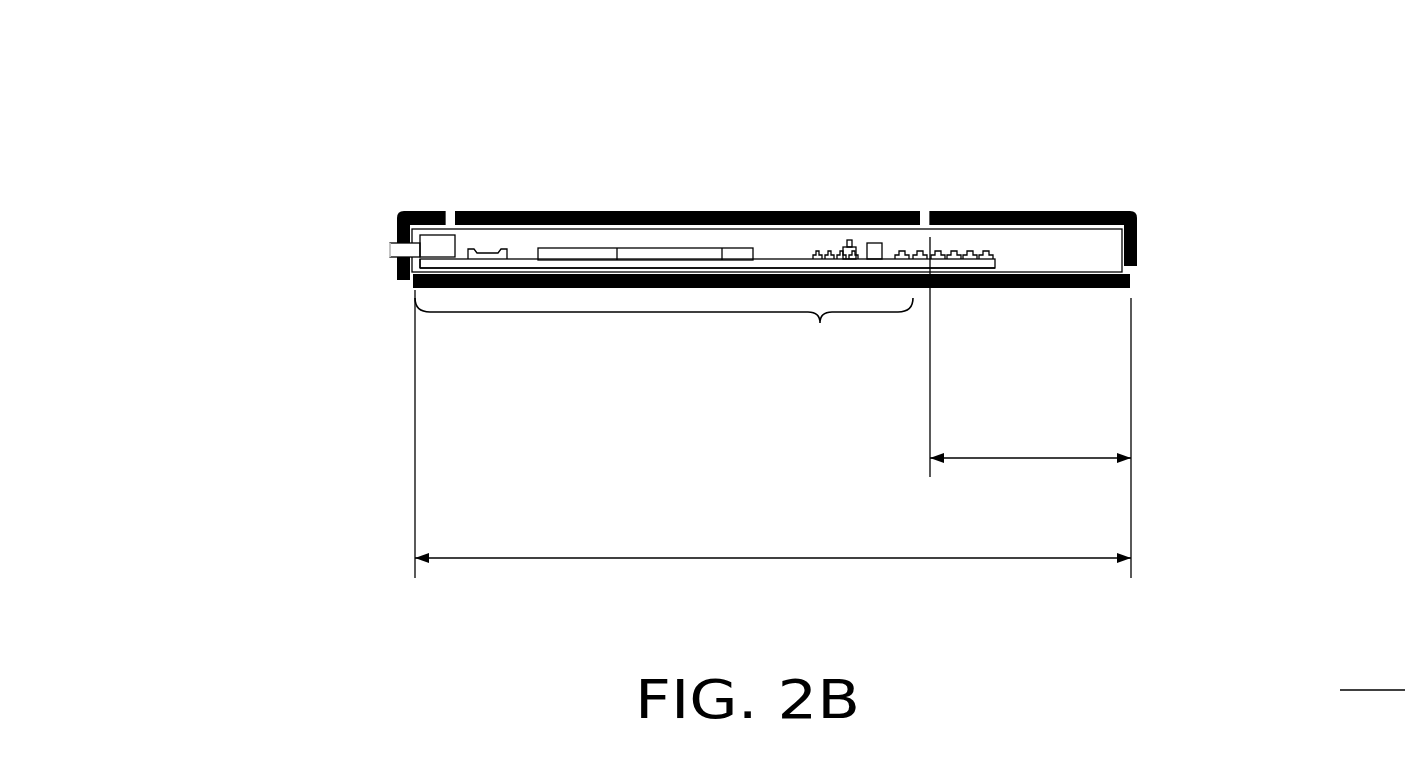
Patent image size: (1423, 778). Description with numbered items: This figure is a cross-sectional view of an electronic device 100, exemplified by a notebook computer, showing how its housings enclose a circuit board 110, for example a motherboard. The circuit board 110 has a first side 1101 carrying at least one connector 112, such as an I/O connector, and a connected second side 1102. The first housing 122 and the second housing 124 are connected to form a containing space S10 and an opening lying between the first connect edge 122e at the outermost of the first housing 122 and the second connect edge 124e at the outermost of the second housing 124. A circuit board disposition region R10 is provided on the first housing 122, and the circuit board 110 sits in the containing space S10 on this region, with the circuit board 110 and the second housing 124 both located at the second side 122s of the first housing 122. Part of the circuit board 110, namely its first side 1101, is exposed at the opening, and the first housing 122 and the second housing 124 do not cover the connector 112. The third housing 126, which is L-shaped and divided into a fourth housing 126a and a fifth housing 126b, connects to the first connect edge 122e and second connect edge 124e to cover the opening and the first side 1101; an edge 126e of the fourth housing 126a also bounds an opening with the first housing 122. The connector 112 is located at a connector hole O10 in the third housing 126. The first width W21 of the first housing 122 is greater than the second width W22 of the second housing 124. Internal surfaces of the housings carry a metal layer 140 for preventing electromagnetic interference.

The electronic device 100 is at (1372, 668).
The circuit board 110 is at (883, 258).
The first side 1101 is at (439, 246).
The second side 1102 is at (671, 230).
The connector 112 is at (408, 247).
The first housing 122 is at (645, 272).
The second side of the first housing 122s is at (676, 255).
The first connect edge 122e is at (415, 300).
The second housing 124 is at (1015, 212).
The second connect edge 124e is at (935, 211).
The third housing 126 is at (290, 42).
The fourth housing 126a is at (485, 212).
The fifth housing 126b is at (438, 212).
The edge of the fourth housing 126e is at (462, 211).
The metal layer 140 is at (1137, 252).
The connector hole O10 is at (378, 250).
The containing space S10 is at (795, 232).
The circuit board disposition region R10 is at (820, 323).
The first width W21 is at (773, 434).
The second width W22 is at (1030, 357).